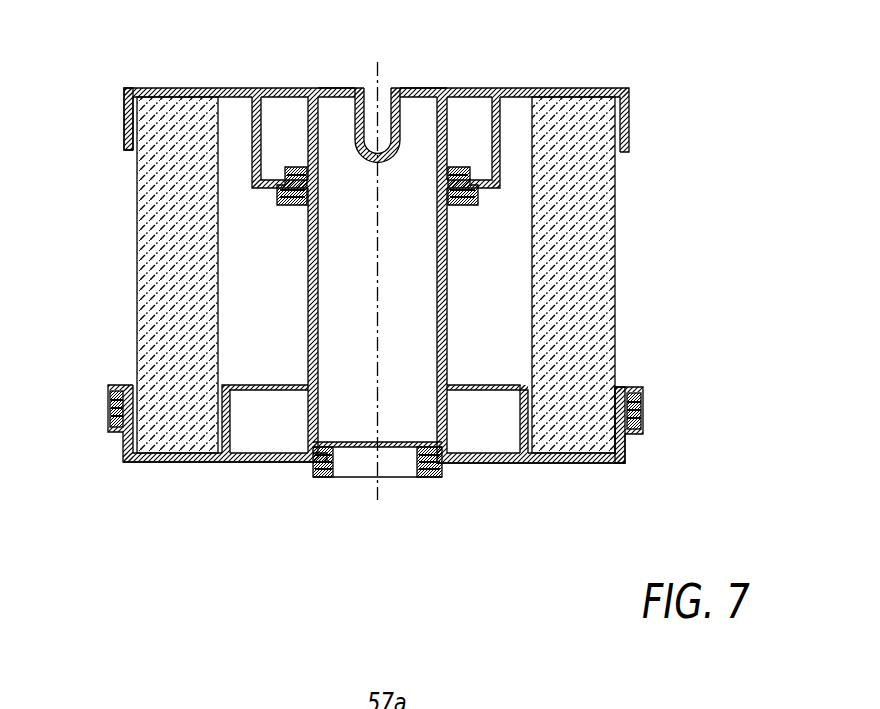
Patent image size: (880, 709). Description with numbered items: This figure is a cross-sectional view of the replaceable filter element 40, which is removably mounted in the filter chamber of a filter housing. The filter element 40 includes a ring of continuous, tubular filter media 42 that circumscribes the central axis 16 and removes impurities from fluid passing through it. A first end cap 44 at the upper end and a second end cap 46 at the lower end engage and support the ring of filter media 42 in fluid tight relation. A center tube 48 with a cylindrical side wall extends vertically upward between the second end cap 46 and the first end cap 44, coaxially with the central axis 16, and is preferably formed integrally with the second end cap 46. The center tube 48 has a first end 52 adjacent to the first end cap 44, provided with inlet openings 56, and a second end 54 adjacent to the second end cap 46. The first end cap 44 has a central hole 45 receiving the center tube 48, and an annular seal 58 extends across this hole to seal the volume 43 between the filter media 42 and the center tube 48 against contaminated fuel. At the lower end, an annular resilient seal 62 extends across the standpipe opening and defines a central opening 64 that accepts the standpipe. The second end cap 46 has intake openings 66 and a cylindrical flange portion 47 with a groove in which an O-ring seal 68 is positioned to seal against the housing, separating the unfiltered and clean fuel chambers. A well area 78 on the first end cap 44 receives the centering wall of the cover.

The central axis 16 is at (380, 503).
The filter element 40 is at (728, 124).
The filter media 42 is at (132, 270).
The volume 43 is at (499, 284).
The first end cap 44 is at (586, 80).
The central hole / flange portion 45 is at (122, 118).
The second end cap 46 is at (584, 474).
The flange portion 47 is at (628, 448).
The center tube 48 is at (454, 352).
The first end 52 is at (445, 123).
The second end 54 is at (446, 430).
The inlet opening 56 is at (337, 96).
The annular seal 58 is at (290, 205).
The annular seal 62 is at (325, 478).
The central opening 64 is at (415, 467).
The intake opening 66 is at (268, 463).
The O-ring seal 68 is at (645, 408).
The well area 78 is at (285, 112).